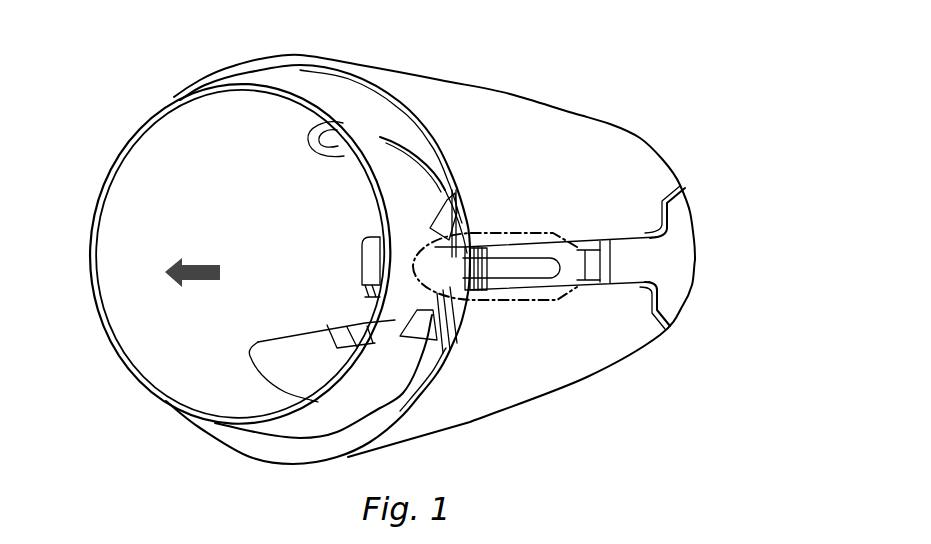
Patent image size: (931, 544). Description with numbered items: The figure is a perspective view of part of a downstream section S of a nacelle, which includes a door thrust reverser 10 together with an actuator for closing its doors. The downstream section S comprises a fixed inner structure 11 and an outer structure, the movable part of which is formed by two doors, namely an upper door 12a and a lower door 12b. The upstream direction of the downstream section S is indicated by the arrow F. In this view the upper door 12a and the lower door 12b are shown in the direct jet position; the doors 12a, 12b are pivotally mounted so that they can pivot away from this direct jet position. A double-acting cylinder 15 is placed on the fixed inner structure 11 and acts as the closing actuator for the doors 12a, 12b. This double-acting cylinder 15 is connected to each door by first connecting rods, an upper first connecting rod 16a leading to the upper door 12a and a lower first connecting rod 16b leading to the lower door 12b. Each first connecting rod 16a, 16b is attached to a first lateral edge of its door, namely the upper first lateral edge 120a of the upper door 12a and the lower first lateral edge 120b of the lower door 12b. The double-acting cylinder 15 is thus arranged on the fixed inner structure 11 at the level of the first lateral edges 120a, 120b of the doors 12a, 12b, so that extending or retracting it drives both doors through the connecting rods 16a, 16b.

The downstream section S is at (394, 242).
The thrust reverser 10 is at (436, 243).
The fixed inner structure 11 is at (300, 90).
The upper door 12a is at (622, 158).
The lower door 12b is at (523, 380).
The double-acting cylinder 15 is at (541, 264).
The upper first connecting rod 16a is at (503, 248).
The lower first connecting rod 16b is at (497, 302).
The upper first lateral edge 120a is at (617, 242).
The lower first lateral edge 120b is at (620, 289).
The arrow F is at (195, 258).